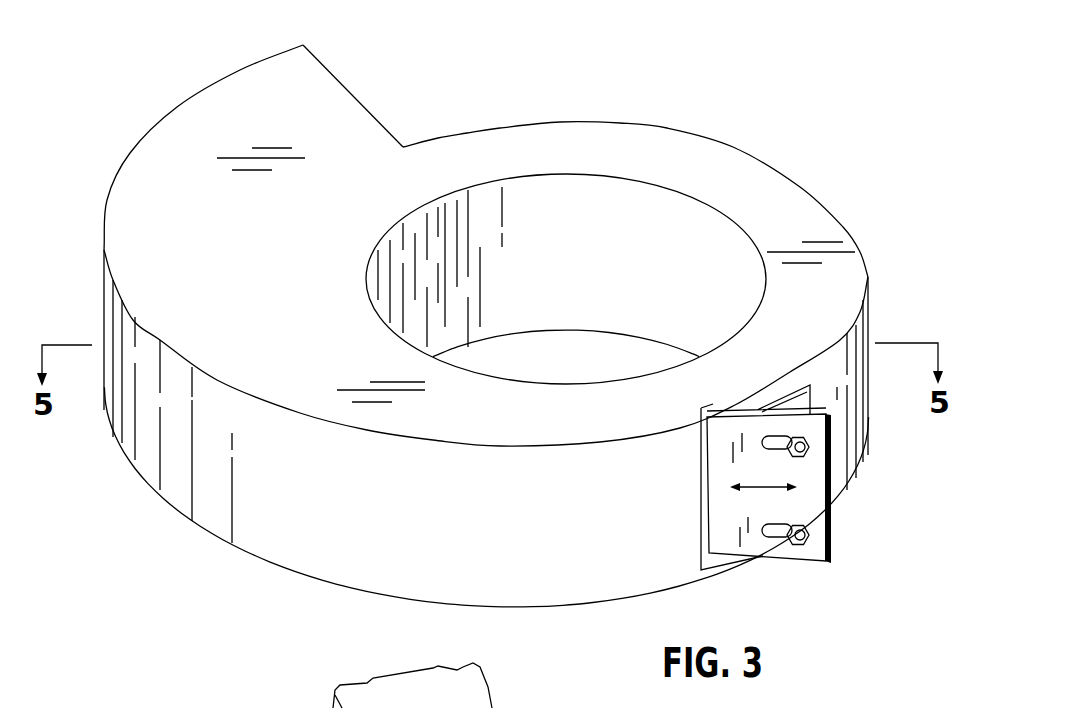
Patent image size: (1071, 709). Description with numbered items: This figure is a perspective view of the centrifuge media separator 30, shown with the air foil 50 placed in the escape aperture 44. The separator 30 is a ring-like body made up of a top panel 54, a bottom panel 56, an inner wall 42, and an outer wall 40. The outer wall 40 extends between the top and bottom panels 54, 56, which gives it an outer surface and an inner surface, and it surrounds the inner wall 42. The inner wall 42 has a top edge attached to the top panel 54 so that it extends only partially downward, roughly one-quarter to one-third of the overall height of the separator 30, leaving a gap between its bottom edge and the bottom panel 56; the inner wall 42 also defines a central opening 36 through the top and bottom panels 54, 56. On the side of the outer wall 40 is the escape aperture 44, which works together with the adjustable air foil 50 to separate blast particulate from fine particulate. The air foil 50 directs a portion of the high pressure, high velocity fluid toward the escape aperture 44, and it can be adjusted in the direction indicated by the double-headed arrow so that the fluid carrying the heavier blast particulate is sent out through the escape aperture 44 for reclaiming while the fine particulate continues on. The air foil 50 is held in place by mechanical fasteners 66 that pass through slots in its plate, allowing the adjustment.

The centrifuge media separator 30 is at (160, 77).
The central opening 36 is at (597, 348).
The outer wall 40 is at (396, 517).
The inner wall 42 is at (560, 281).
The escape aperture 44 is at (710, 557).
The air foil 50 is at (848, 553).
The top panel 54 is at (280, 279).
The bottom panel 56 is at (243, 552).
The mechanical fasteners 66 is at (800, 450).